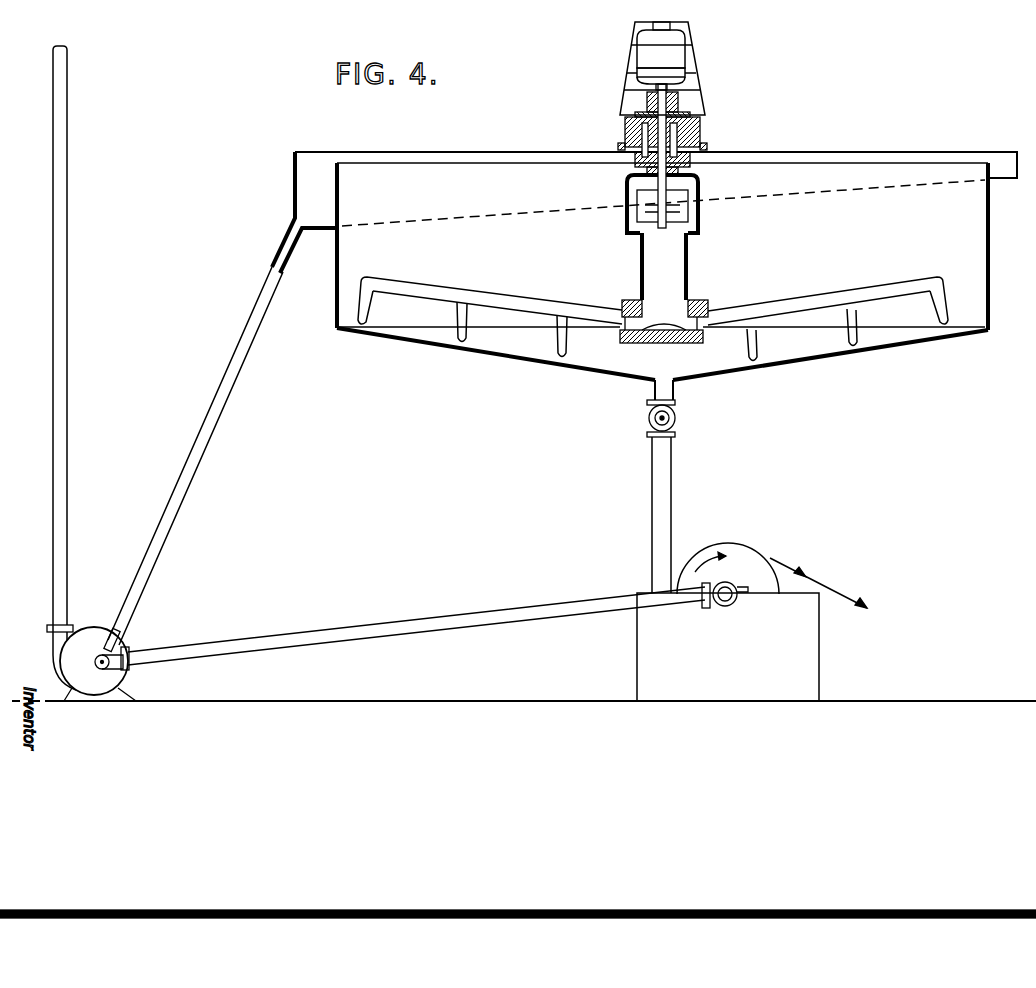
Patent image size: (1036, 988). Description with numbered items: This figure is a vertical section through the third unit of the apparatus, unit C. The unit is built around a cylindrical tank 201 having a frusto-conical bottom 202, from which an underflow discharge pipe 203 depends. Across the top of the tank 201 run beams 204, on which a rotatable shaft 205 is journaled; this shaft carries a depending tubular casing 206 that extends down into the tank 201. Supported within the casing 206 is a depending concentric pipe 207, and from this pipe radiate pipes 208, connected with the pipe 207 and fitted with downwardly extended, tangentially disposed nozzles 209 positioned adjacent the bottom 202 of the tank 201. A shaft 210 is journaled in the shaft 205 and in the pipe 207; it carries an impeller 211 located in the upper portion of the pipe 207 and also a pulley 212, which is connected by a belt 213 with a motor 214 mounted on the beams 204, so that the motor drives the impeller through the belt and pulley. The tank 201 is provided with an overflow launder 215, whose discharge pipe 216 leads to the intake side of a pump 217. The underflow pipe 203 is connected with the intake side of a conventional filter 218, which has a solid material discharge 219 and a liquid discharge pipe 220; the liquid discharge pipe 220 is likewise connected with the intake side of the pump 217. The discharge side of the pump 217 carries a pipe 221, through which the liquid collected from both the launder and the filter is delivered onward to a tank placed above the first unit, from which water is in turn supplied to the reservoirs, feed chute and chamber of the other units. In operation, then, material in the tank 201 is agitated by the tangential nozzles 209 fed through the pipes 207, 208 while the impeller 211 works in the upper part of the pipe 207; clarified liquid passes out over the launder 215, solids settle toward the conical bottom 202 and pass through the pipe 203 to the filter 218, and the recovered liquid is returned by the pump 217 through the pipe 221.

The cylindrical tank 201 is at (656, 241).
The frusto-conical bottom 202 is at (903, 352).
The underflow discharge pipe 203 is at (655, 472).
The beams 204 is at (627, 130).
The rotatable shaft 205 is at (680, 174).
The tubular casing 206 is at (698, 222).
The concentric pipe 207 is at (640, 258).
The radiating pipes 208 is at (815, 305).
The nozzles 209 is at (552, 340).
The shaft 210 is at (650, 174).
The impeller 211 is at (669, 222).
The pulley 212 is at (693, 90).
The belt 213 is at (645, 100).
The motor 214 is at (640, 48).
The overflow launder 215 is at (303, 163).
The discharge pipe 216 is at (197, 470).
The pump 217 is at (103, 692).
The filter 218 is at (690, 695).
The solid material discharge 219 is at (867, 608).
The liquid discharge pipe 220 is at (495, 600).
The pipe 221 is at (50, 187).